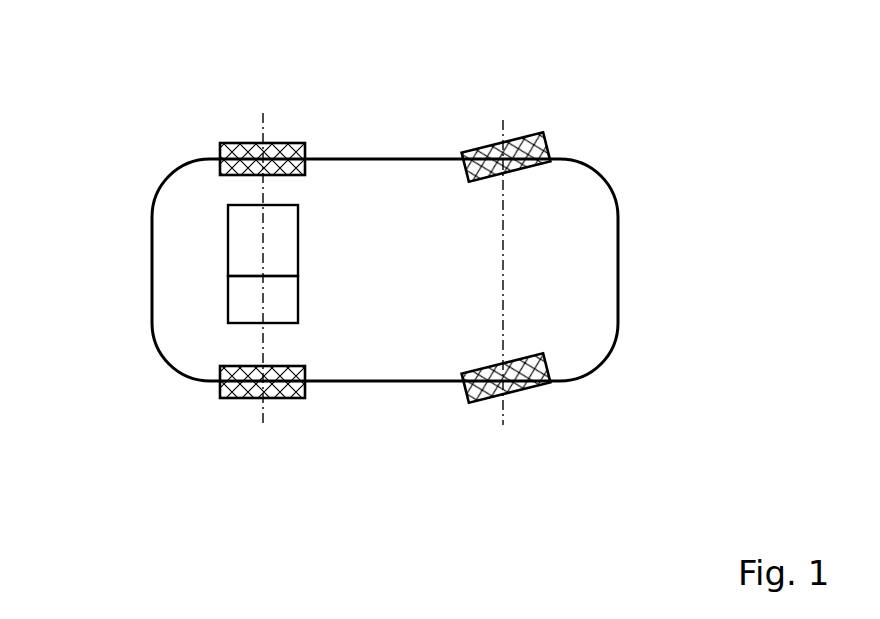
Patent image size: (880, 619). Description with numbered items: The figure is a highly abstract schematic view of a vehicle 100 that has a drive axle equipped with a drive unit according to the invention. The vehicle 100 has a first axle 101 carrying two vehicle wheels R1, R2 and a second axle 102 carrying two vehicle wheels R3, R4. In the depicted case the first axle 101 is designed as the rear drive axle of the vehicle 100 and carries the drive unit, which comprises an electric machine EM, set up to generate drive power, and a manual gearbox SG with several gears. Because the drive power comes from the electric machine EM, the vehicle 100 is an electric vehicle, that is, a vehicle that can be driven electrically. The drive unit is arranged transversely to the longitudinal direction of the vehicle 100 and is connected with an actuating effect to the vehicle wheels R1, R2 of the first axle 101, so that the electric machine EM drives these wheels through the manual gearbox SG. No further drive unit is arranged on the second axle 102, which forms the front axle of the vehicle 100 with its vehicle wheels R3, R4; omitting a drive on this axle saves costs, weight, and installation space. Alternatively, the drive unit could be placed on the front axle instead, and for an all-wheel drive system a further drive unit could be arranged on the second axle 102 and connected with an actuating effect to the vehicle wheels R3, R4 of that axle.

The vehicle 100 is at (152, 130).
The first axle 101 is at (263, 445).
The second axle 102 is at (503, 445).
The vehicle wheel R1 is at (278, 145).
The vehicle wheel R2 is at (270, 395).
The vehicle wheel R3 is at (548, 143).
The vehicle wheel R4 is at (530, 390).
The manual gearbox SG is at (240, 237).
The electric machine EM is at (240, 300).